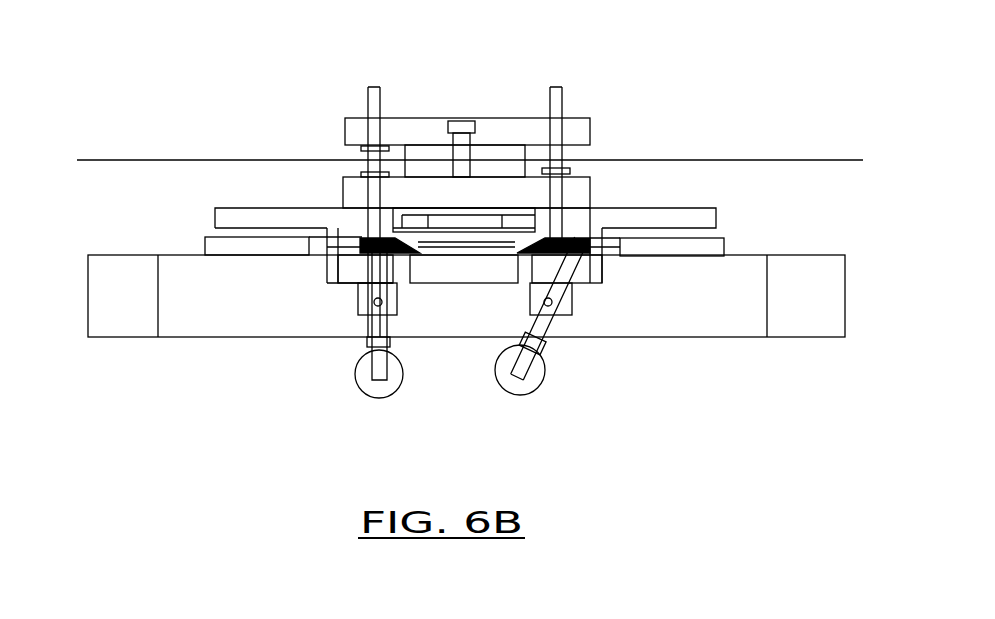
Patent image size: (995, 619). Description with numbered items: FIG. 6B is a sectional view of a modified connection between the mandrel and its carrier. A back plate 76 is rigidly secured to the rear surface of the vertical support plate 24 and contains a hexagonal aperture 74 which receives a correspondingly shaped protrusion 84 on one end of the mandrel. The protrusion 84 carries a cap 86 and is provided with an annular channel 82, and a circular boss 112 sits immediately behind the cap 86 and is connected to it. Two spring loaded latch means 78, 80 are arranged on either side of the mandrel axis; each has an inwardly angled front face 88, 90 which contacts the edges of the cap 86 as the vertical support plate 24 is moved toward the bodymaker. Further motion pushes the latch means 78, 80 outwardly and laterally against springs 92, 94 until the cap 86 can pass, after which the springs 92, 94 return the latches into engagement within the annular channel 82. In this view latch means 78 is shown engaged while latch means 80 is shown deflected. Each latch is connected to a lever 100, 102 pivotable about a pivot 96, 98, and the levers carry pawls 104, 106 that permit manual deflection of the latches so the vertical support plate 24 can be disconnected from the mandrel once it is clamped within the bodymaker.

The vertical support plate 24 is at (713, 275).
The hexagonal aperture 74 is at (385, 232).
The back plate 76 is at (228, 222).
The spring loaded latch means 78 is at (345, 256).
The spring loaded latch means 80 is at (600, 238).
The annular channel 82 is at (560, 232).
The protrusion 84 is at (433, 243).
The cap 86 is at (457, 268).
The inwardly angled front face 88 is at (401, 257).
The inwardly angled front face 90 is at (530, 257).
The spring 92 is at (340, 242).
The spring 94 is at (597, 275).
The pivot 96 is at (373, 302).
The pivot 98 is at (572, 308).
The lever 100 is at (368, 340).
The lever 102 is at (550, 328).
The pawl 104 is at (378, 398).
The pawl 106 is at (527, 396).
The circular boss 112 is at (448, 250).